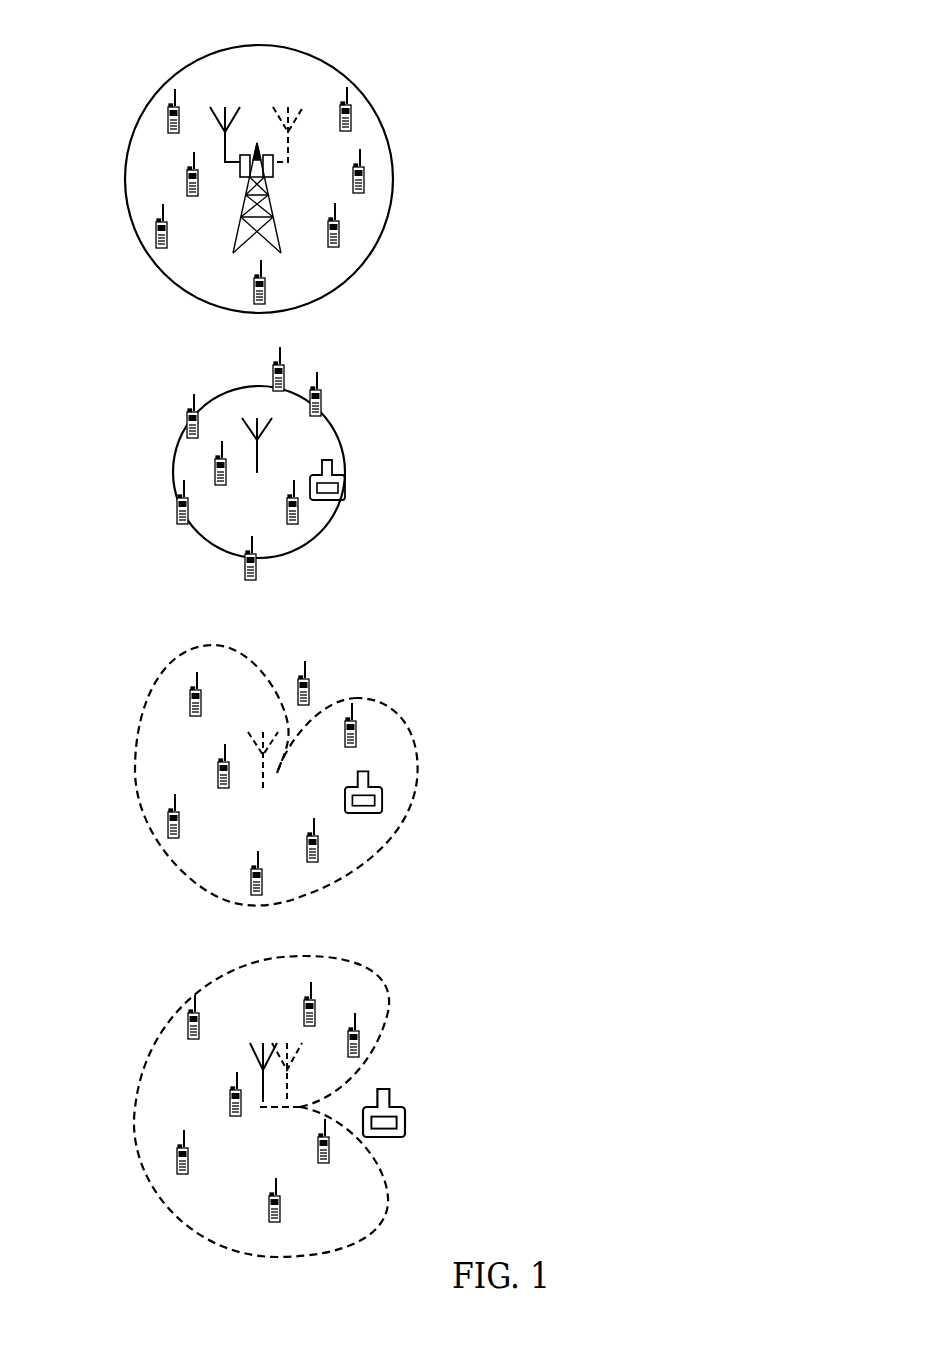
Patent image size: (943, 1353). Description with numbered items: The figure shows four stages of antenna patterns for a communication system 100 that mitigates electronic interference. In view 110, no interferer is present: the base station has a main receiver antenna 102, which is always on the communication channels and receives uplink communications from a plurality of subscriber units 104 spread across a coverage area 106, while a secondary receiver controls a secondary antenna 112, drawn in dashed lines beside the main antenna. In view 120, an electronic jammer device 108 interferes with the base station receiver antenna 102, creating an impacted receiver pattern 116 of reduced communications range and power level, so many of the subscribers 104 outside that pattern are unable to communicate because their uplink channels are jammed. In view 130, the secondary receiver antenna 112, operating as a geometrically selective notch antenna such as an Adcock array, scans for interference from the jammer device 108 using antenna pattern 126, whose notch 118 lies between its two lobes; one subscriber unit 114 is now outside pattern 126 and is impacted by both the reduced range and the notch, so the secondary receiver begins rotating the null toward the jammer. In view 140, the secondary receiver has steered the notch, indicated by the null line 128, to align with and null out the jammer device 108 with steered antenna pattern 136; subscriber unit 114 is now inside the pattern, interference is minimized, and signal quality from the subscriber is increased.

The communication system 100 is at (155, 41).
The main receiver antenna 102 is at (216, 108).
The subscriber units 104 is at (168, 117).
The coverage area 106 is at (152, 262).
The electronic jammer device 108 is at (345, 488).
The view 110 is at (622, 209).
The secondary antenna 112 is at (280, 110).
The subscriber unit 114 is at (305, 668).
The impacted receiver pattern 116 is at (173, 466).
The antenna null 118 is at (283, 752).
The view 120 is at (679, 520).
The antenna pattern 126 is at (135, 766).
The rotated antenna null 128 is at (275, 1109).
The view 130 is at (702, 816).
The steered antenna pattern 136 is at (135, 1108).
The view 140 is at (704, 1171).